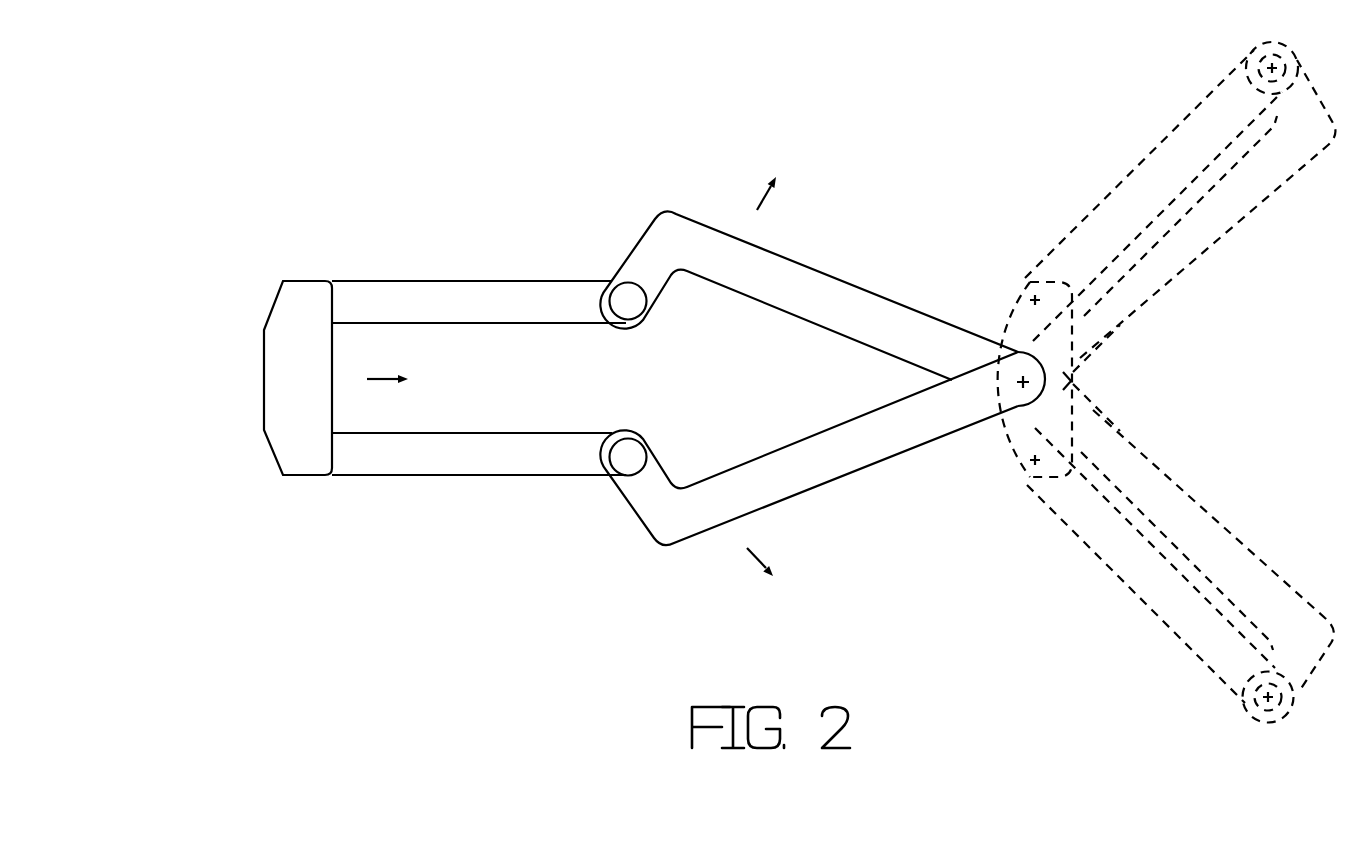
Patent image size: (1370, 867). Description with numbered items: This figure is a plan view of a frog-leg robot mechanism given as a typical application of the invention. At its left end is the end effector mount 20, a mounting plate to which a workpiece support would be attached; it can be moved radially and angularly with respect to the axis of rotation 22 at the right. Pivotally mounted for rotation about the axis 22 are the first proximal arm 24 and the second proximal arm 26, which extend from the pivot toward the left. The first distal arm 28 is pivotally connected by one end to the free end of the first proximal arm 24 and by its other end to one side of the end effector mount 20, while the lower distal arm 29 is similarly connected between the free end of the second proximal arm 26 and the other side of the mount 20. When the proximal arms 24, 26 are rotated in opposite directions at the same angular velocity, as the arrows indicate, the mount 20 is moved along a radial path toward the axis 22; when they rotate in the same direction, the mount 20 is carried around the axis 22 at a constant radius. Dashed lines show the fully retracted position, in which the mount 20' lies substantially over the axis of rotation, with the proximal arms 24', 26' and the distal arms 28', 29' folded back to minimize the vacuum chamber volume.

The end effector mount 20 is at (292, 378).
The axis of rotation 22 is at (1019, 388).
The first proximal arm 24 is at (809, 278).
The second proximal arm 26 is at (809, 464).
The first distal arm 28 is at (479, 251).
The lower bar 29 is at (479, 513).
The end effector mount in retracted position 20' is at (1139, 379).
The first proximal arm in retracted position 24' is at (1215, 216).
The second proximal arm in retracted position 26' is at (1203, 537).
The first distal arm in retracted position 28' is at (1161, 191).
The lower bar in deployed position (phantom) 29' is at (1160, 575).